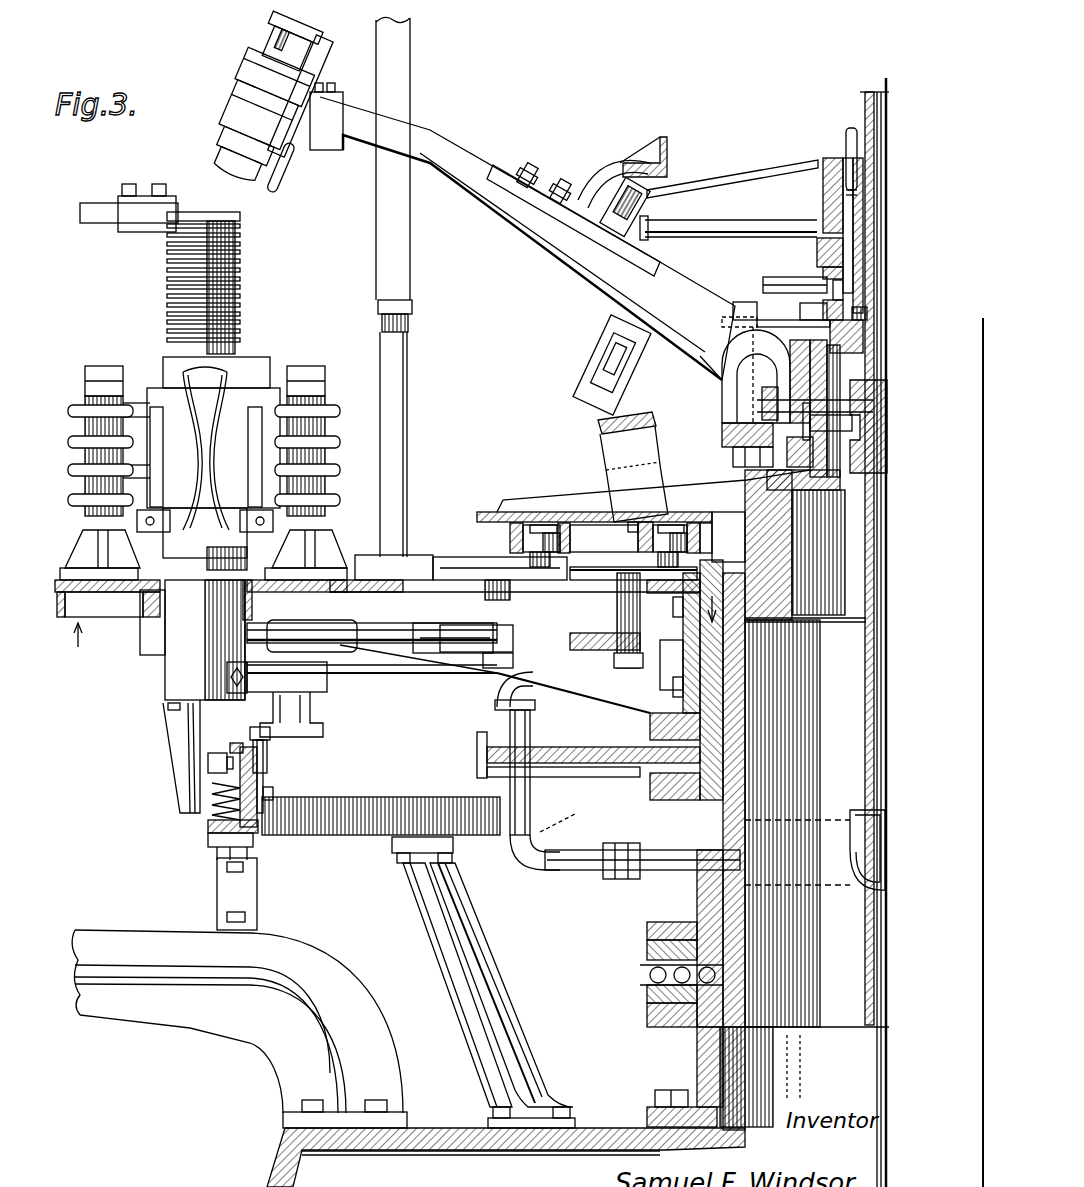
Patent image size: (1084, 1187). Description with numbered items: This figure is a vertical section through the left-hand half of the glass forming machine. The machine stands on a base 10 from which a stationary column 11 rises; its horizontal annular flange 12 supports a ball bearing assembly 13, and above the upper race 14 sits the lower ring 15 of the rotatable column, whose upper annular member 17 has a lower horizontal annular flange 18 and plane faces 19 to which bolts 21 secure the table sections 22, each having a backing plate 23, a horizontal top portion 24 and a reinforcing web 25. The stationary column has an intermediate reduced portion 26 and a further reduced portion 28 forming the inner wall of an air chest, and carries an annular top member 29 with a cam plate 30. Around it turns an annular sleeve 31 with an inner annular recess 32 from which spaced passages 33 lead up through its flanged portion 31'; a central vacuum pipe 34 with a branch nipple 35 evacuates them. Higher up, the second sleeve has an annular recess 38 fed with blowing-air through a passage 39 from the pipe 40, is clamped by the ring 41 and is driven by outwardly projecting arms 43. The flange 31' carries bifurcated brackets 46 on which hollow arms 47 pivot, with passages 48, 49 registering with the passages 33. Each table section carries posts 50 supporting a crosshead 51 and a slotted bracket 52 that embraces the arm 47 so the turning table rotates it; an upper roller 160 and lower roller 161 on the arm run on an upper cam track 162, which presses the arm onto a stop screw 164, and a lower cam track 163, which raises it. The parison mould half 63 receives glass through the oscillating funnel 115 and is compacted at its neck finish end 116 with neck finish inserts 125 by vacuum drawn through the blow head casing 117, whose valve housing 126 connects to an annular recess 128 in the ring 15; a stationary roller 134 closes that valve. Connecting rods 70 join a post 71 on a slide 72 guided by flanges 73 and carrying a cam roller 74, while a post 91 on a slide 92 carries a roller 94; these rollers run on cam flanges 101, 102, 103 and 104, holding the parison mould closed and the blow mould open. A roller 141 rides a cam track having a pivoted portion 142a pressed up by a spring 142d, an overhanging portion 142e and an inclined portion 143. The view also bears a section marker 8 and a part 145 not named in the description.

The section line 8 is at (392, 618).
The base 10 is at (592, 1135).
The stationary column 11 is at (707, 1062).
The horizontal annular flange 12 is at (648, 1010).
The ball bearing assembly 13 is at (645, 975).
The upper race 14 is at (650, 950).
The lower ring 15 is at (698, 907).
The upper annular member 17 is at (680, 689).
The lower horizontal annular flange 18 is at (652, 724).
The vertically disposed plane faces 19 is at (745, 638).
The bolts 21 is at (666, 663).
The table sections 22 is at (680, 640).
The backing plate 23 is at (745, 671).
The horizontal top portion 24 is at (395, 575).
The reinforcing web 25 is at (580, 677).
The intermediate reduced portion 26 is at (792, 556).
The further reduced portion 28 is at (825, 322).
The annular top member 29 is at (822, 160).
The cam plate 30 is at (690, 190).
The annular sleeve 31 is at (739, 375).
The horizontally flanged portion 31' is at (744, 445).
The annular recess 32 is at (800, 430).
The spaced passages 33 is at (776, 470).
The central vacuum pipe 34 is at (866, 717).
The branch nipple 35 is at (842, 422).
The annular recess 38 is at (822, 270).
The passage 39 is at (850, 192).
The pipe 40 is at (848, 130).
The ring 41 is at (820, 218).
The outwardly projecting arms 43 is at (760, 325).
The bifurcated upstanding bracket 46 is at (724, 385).
The hollow arm 47 is at (535, 215).
The inwardly facing opening 48 is at (798, 380).
The vacuum passage 49 is at (757, 408).
The upstanding posts 50 is at (408, 475).
The crosshead 51 is at (410, 330).
The vertically slotted bracket 52 is at (410, 100).
The parison mould half 63 is at (240, 360).
The connecting rods 70 is at (440, 648).
The downwardly projecting post 71 is at (500, 612).
The slide 72 is at (445, 590).
The guide flange 73 is at (430, 565).
The cam roller 74 is at (540, 525).
The downwardly projecting post 91 is at (620, 612).
The slide 92 is at (578, 578).
The cam roller 94 is at (663, 530).
The flange 101 is at (520, 545).
The flange 102 is at (588, 530).
The flange 103 is at (640, 510).
The flange 104 is at (700, 530).
The oscillating funnel 115 is at (172, 292).
The neck finish end 116 is at (322, 521).
The outer cylindrical casing 117 is at (175, 676).
The neck finish inserts 125 is at (195, 545).
The valve housing 126 is at (312, 705).
The annular recess 128 is at (710, 875).
The roller 134 is at (252, 740).
The roller 141 is at (212, 775).
The pivoted track portion 142a is at (222, 793).
The spring 142d is at (215, 810).
The overhanging track portion 142e is at (273, 760).
The upwardly inclined portion 143 is at (560, 828).
The valve 145 is at (250, 122).
The upwardly disposed roller 160 is at (622, 222).
The downwardly projecting roller 161 is at (620, 366).
The upper cam track 162 is at (655, 175).
The lower cam track 163 is at (612, 430).
The stop screw 164 is at (408, 304).